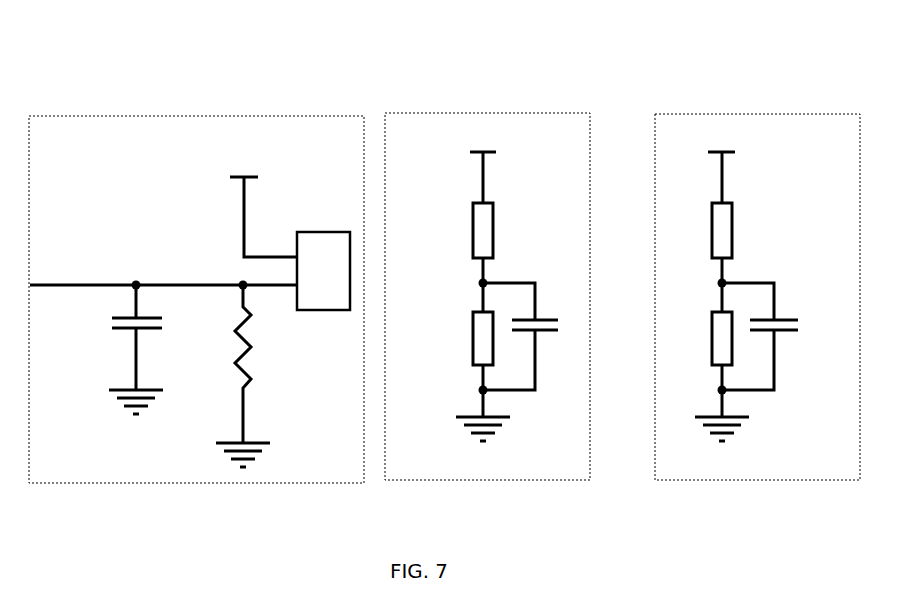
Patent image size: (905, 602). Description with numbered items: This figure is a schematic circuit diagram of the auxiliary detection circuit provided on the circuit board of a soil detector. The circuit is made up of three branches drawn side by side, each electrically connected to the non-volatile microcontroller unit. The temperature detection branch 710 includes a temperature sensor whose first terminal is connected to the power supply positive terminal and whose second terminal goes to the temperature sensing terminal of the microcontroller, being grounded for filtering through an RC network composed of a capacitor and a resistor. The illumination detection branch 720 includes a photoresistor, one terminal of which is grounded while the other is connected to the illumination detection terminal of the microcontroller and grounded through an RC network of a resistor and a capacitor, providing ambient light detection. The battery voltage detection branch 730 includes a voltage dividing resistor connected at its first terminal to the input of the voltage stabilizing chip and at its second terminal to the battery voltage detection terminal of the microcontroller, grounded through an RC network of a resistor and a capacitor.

The temperature detection branch 710 is at (212, 40).
The illumination detection branch 720 is at (504, 255).
The battery voltage detection branch 730 is at (761, 255).